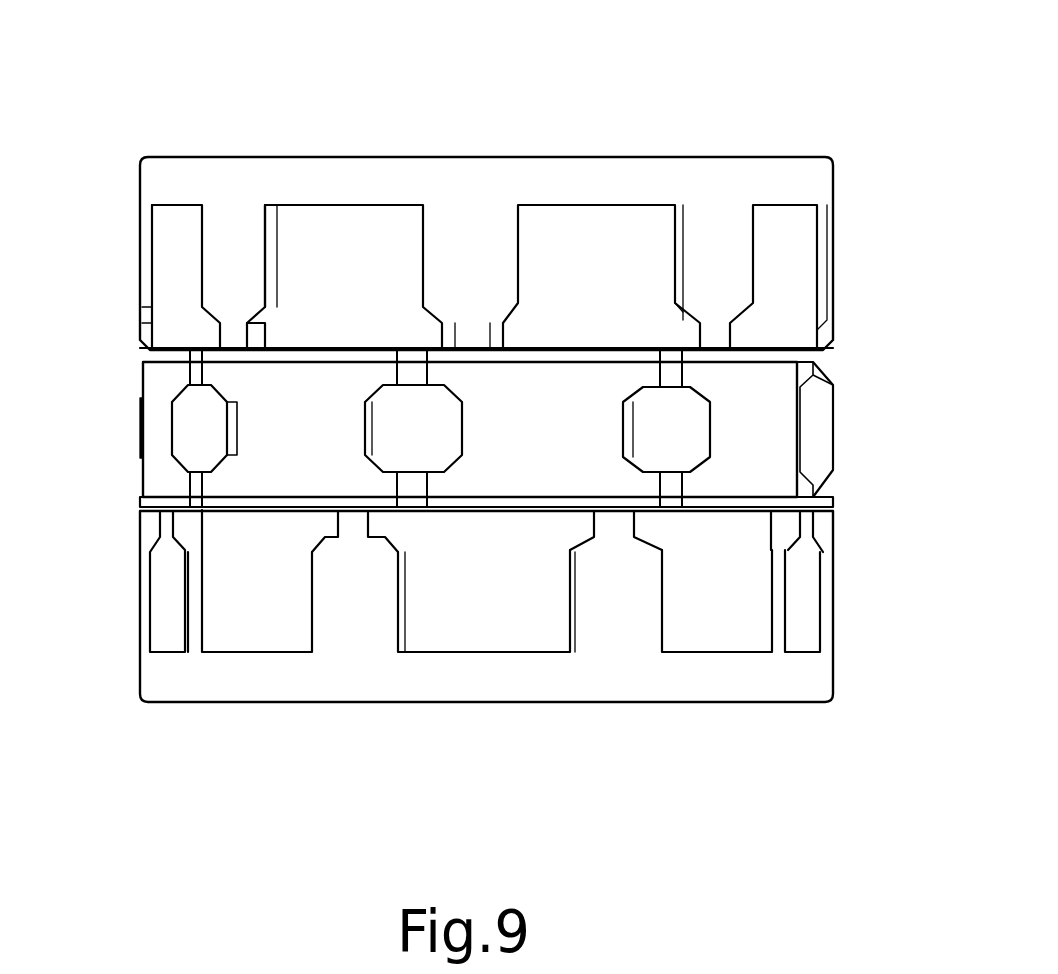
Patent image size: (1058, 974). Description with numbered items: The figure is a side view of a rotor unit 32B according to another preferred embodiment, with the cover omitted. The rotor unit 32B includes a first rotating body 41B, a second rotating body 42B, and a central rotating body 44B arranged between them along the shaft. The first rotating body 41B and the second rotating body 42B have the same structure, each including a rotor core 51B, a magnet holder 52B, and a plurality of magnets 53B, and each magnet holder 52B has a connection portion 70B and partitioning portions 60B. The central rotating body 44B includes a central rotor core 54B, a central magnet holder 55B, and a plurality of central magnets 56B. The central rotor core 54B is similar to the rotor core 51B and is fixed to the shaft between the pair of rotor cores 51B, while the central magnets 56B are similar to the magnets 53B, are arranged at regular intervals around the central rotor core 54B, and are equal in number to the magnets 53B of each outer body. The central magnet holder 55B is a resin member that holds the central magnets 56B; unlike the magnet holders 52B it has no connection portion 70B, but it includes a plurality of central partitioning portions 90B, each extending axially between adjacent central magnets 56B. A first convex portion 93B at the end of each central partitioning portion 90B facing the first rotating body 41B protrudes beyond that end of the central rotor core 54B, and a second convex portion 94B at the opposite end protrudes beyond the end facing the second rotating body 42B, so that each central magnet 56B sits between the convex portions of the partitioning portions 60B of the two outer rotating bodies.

The rotor unit 32B is at (214, 103).
The first rotating body 41B is at (118, 590).
The second rotating body 42B is at (118, 265).
The central rotating body 44B is at (118, 425).
The rotor core 51B is at (558, 350).
The magnet holder 52B is at (742, 102).
The magnet 53B is at (374, 262).
The central rotor core 54B is at (540, 505).
The central magnet holder 55B is at (885, 385).
The central magnet 56B is at (308, 418).
The partitioning portion 60B is at (723, 265).
The connection portion 70B is at (632, 183).
The central partitioning portion 90B is at (675, 423).
The first convex portion 93B is at (660, 515).
The second convex portion 94B is at (660, 350).